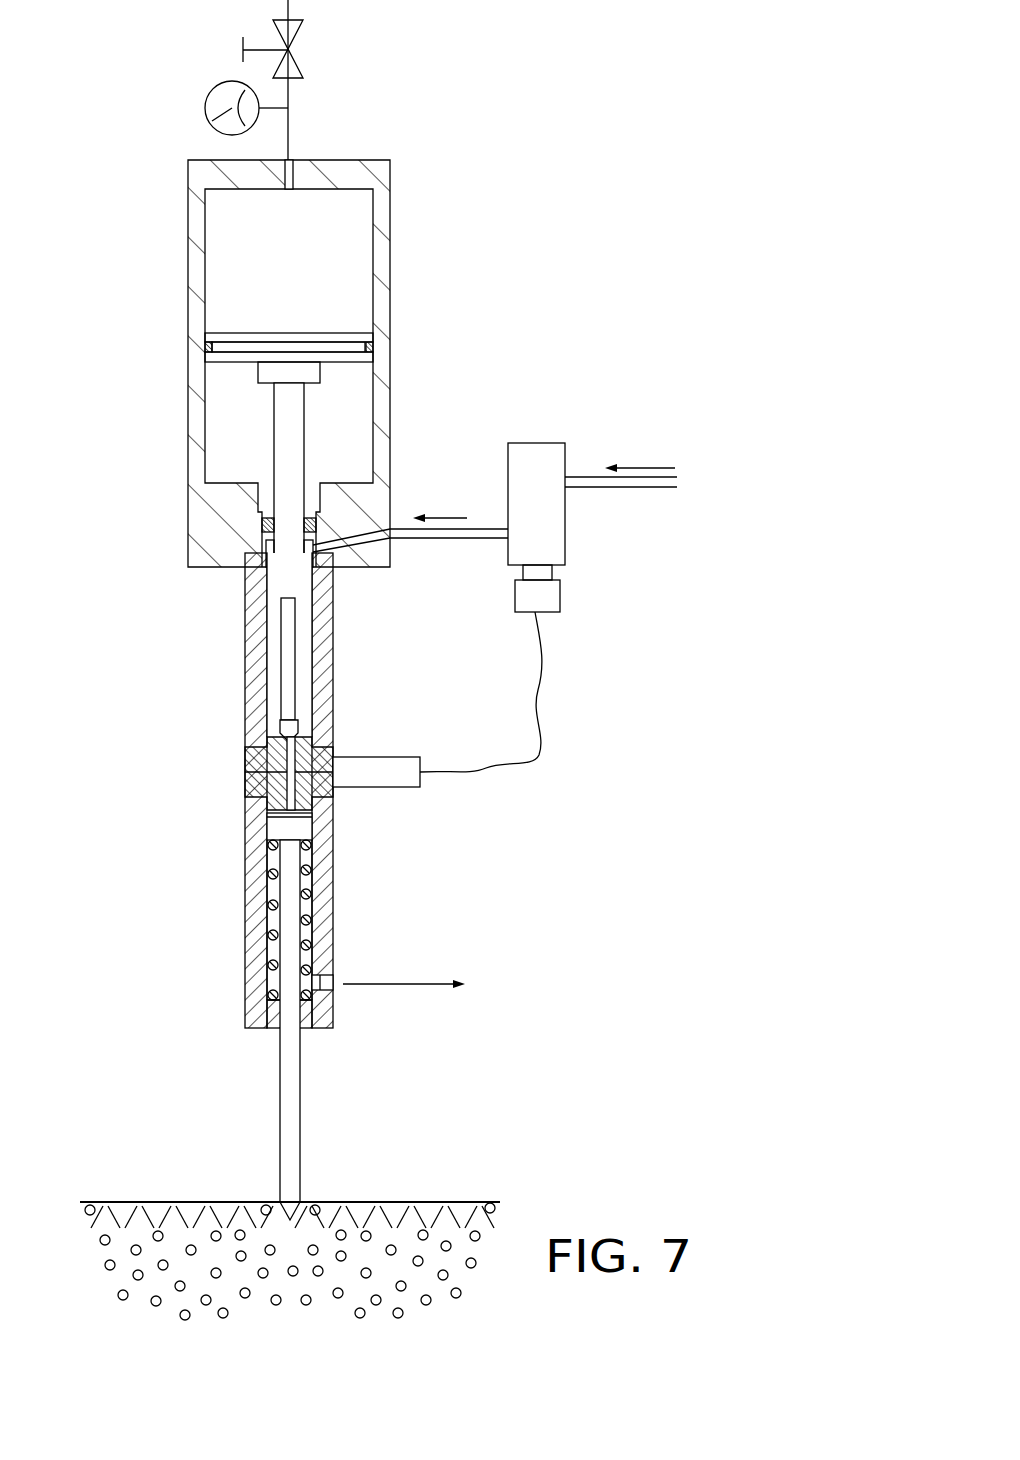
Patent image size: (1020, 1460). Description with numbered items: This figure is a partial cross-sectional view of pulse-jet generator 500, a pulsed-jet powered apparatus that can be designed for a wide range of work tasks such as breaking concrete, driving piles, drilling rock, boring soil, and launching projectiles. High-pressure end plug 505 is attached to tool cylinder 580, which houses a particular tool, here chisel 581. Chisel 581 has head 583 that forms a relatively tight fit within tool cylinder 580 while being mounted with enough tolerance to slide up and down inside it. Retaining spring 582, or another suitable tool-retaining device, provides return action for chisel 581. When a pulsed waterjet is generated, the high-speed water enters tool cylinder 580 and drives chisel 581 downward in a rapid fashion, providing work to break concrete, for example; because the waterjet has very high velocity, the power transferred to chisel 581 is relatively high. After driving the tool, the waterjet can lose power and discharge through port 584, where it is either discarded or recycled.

The pulse-jet generator 500 is at (530, 197).
The high-pressure end plug 505 is at (252, 773).
The tool cylinder 580 is at (256, 890).
The chisel 581 is at (290, 1107).
The retaining spring 582 is at (270, 936).
The head 583 is at (297, 827).
The port 584 is at (320, 983).